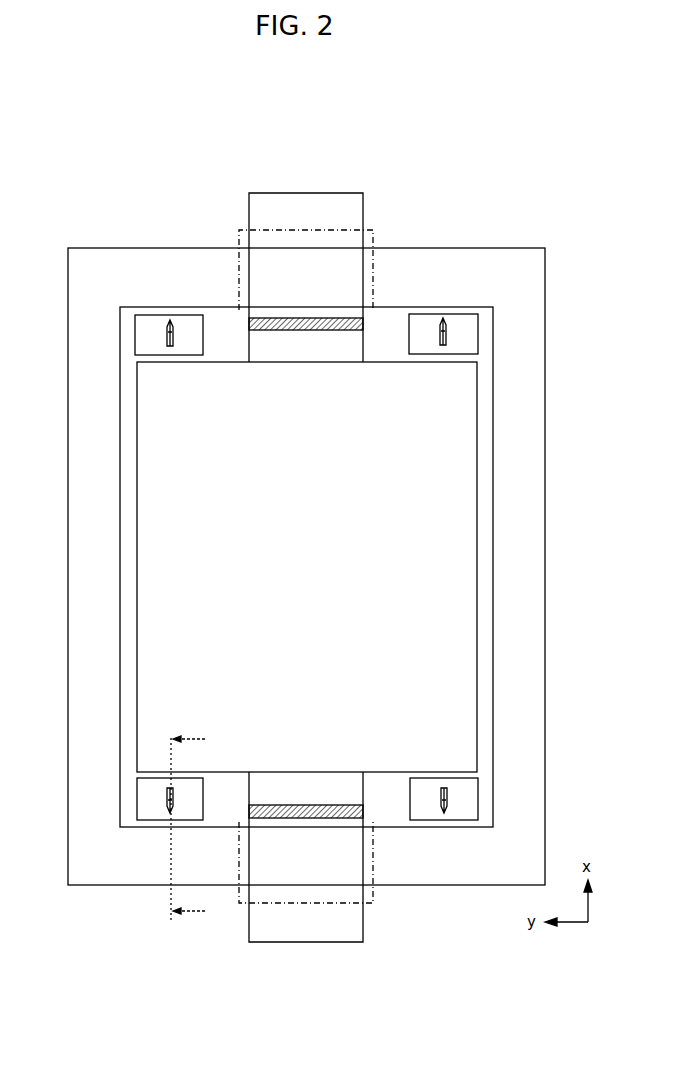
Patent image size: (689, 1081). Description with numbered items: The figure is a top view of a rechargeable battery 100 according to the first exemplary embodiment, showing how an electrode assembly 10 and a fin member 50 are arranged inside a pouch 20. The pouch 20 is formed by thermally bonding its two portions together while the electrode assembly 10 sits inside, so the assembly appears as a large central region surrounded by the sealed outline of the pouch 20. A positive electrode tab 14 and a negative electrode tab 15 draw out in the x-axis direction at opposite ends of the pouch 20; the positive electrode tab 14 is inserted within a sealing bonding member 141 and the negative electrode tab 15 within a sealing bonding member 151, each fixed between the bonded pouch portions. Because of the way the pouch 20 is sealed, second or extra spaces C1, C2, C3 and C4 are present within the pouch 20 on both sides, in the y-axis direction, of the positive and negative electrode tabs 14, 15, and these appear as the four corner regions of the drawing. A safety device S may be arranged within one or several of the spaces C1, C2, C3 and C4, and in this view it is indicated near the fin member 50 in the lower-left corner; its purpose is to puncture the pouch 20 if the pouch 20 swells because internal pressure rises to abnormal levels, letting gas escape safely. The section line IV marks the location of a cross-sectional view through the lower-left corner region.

The rechargeable battery 100 is at (324, 97).
The electrode assembly 10 is at (324, 571).
The pouch 20 is at (518, 247).
The negative electrode tab 15 is at (278, 200).
The sealing bonding member 151 is at (336, 230).
The positive electrode tab 14 is at (279, 928).
The sealing bonding member 141 is at (337, 905).
The fin member 50 is at (168, 812).
The safety device S is at (136, 787).
The second space C1 is at (227, 805).
The second space C2 is at (396, 805).
The second space C3 is at (226, 330).
The second space C4 is at (394, 330).
The section line IV is at (198, 827).